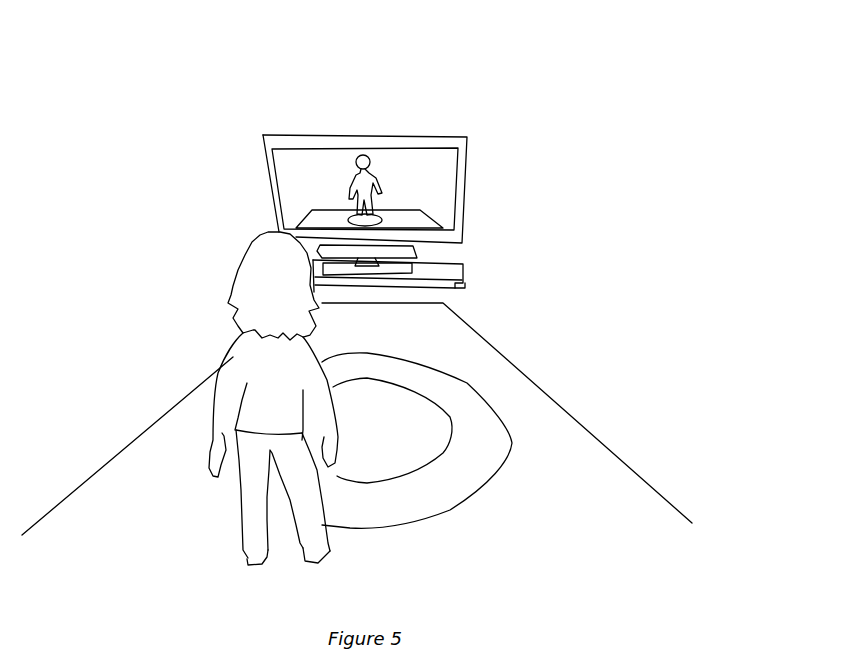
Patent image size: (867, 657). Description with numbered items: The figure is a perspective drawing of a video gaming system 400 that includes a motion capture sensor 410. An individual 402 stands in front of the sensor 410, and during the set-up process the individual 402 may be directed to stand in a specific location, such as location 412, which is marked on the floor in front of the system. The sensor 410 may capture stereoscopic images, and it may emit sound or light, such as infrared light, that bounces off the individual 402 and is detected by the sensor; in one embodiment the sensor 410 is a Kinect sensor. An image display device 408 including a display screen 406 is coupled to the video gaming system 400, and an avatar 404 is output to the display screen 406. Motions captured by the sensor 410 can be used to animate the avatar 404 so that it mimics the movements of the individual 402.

The system environment 400 is at (162, 56).
The individual 402 is at (262, 372).
The avatar 404 is at (370, 180).
The display screen 406 is at (290, 170).
The image display device 408 is at (465, 190).
The motion capture sensor 410 is at (413, 252).
The location 412 is at (420, 418).